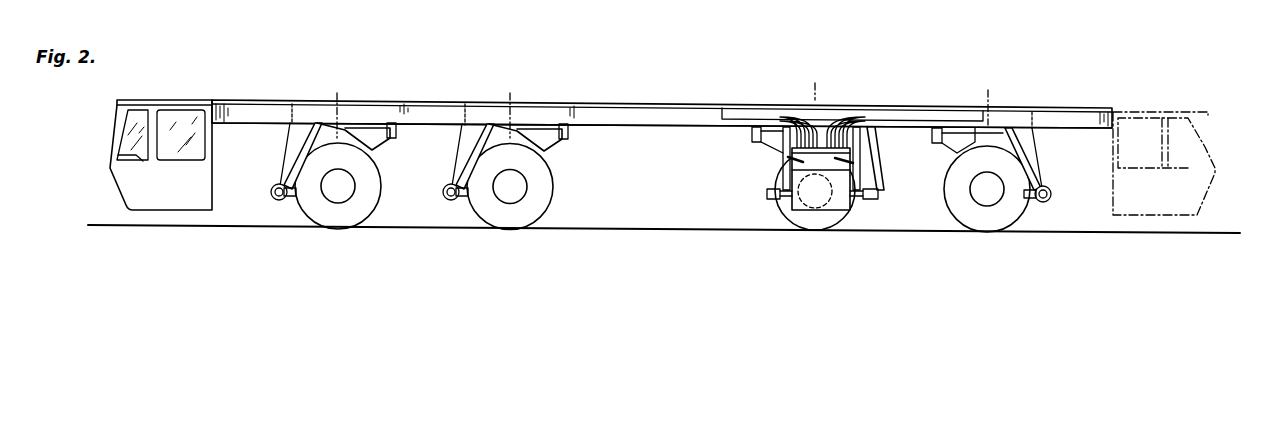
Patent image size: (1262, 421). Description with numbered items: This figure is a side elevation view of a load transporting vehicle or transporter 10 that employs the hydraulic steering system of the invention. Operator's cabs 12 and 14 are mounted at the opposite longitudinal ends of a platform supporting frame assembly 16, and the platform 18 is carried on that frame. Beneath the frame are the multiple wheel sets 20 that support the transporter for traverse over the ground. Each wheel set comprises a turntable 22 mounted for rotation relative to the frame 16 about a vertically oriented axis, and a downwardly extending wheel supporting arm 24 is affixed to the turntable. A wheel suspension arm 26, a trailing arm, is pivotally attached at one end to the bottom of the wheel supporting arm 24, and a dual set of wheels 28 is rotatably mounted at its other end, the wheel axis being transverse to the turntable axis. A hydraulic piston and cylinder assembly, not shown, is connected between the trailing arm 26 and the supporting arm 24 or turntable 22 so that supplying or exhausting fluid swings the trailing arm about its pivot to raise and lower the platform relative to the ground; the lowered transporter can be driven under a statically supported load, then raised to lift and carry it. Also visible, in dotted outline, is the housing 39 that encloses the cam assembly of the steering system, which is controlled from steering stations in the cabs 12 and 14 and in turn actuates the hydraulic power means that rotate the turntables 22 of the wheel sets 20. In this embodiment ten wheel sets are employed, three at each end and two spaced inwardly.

The transporter 10 is at (1082, 94).
The operator's cab 12 is at (116, 149).
The operator's cab 14 is at (1207, 140).
The frame assembly 16 is at (652, 113).
The platform 18 is at (434, 103).
The wheel set 20 is at (370, 215).
The turntable 22 is at (347, 128).
The wheel supporting arm 24 is at (289, 149).
The wheel suspension arm 26 is at (284, 200).
The dual set of wheels 28 is at (343, 217).
The housing 39 is at (806, 210).